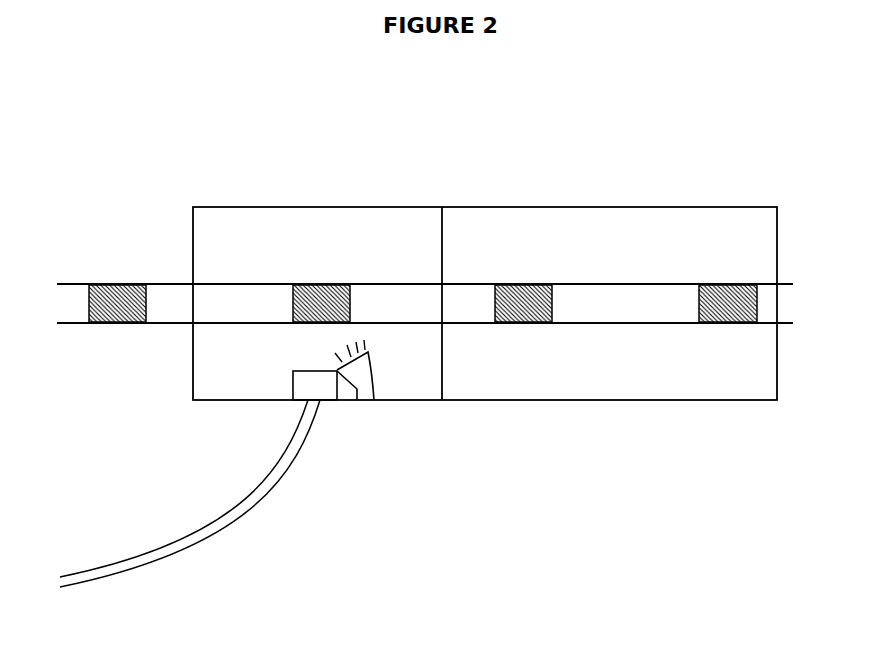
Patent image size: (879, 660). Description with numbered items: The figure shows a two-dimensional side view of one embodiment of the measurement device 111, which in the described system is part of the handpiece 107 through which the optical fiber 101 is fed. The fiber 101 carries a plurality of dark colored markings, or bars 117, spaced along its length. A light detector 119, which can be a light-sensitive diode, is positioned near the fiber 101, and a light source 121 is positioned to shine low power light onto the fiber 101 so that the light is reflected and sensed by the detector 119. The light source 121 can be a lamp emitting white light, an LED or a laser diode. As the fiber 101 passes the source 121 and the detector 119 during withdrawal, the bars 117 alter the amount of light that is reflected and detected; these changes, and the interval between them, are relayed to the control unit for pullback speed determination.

The handpiece 107 is at (479, 141).
The measurement device 111 is at (258, 207).
The optical fiber 101 is at (630, 287).
The bars 117 is at (515, 288).
The light detector 119 is at (300, 390).
The light source 121 is at (367, 395).